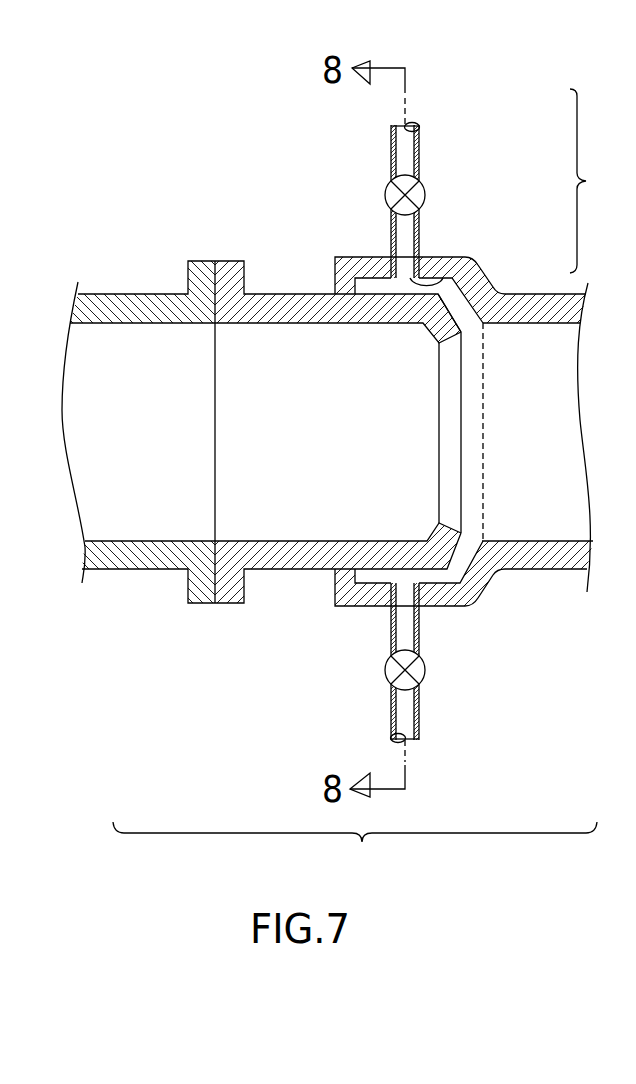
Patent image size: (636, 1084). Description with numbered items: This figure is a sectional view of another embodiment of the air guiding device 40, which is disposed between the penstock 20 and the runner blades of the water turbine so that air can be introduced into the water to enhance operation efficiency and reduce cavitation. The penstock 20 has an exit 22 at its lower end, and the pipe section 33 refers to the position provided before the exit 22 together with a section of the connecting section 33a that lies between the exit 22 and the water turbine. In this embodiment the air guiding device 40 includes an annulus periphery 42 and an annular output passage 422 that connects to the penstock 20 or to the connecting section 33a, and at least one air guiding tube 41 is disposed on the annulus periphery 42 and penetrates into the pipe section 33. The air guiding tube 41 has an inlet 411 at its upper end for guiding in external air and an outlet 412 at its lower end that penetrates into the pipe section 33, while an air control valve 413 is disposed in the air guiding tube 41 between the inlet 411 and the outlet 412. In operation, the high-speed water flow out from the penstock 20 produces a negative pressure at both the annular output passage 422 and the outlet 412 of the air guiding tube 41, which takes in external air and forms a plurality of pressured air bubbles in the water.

The penstock 20 is at (138, 294).
The exit 22 is at (215, 427).
The pipe section 33 is at (355, 848).
The connecting section 33a is at (542, 562).
The air guiding device 40 is at (597, 181).
The air guiding tube 41 is at (420, 147).
The inlet 411 is at (403, 125).
The outlet 412 is at (441, 267).
The air control valve 413 is at (419, 191).
The annulus periphery 42 is at (352, 257).
The annular output passage 422 is at (460, 311).